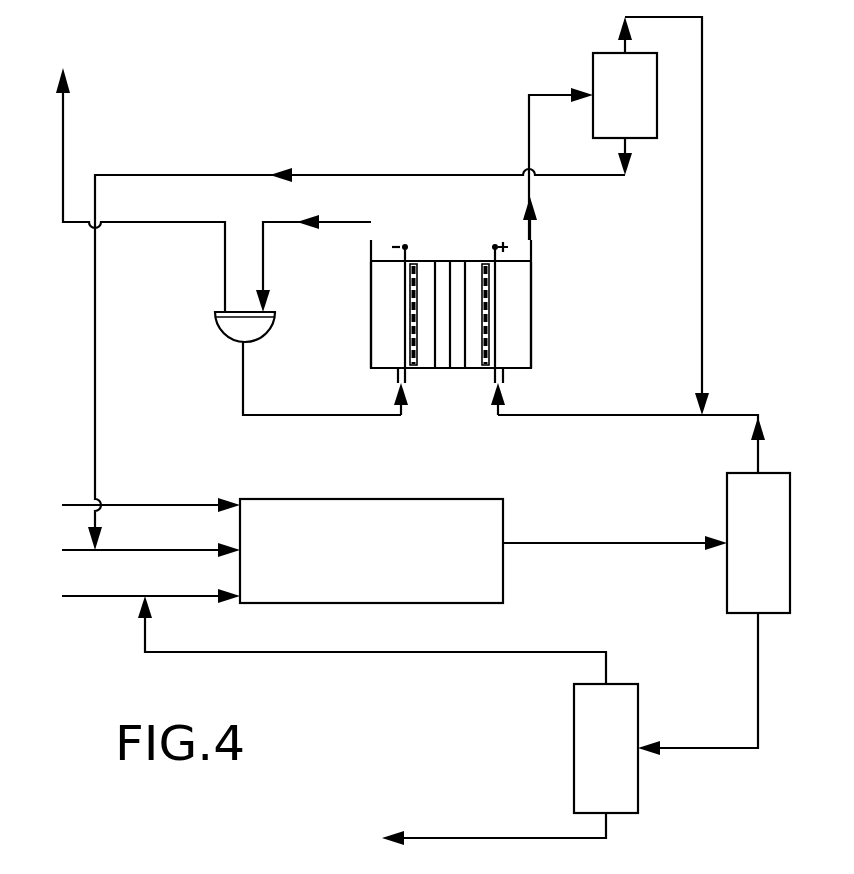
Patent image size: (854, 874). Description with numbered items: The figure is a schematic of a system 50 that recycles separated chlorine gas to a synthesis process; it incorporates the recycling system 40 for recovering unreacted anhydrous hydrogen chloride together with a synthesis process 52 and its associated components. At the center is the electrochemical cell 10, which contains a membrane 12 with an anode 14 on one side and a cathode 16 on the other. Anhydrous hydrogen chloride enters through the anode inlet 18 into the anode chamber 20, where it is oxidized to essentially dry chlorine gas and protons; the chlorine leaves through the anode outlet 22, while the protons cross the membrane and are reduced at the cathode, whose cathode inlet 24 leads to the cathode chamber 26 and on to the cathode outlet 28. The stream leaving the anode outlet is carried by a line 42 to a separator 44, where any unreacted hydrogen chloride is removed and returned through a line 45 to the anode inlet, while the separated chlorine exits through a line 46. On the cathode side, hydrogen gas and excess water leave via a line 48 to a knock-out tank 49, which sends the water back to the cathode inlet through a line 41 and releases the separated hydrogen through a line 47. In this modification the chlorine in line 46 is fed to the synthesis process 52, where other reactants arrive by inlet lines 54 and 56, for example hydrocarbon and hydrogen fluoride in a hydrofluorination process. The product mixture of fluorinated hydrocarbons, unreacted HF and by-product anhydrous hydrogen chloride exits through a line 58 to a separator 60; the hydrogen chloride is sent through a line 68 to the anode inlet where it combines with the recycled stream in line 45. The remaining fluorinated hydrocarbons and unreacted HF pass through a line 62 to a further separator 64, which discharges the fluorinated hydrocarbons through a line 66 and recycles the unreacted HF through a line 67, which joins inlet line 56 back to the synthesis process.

The electrochemical cell 10 is at (570, 283).
The membrane 12 is at (447, 370).
The anode 14 is at (472, 348).
The cathode 16 is at (424, 348).
The anode inlet 18 is at (502, 374).
The anode chamber 20 is at (525, 320).
The anode outlet 22 is at (538, 240).
The cathode inlet 24 is at (400, 372).
The cathode chamber 26 is at (372, 305).
The cathode outlet 28 is at (375, 240).
The system for recycling unreacted anhydrous hydrogen chloride 40 is at (233, 430).
The line 41 is at (313, 418).
The anolyte outlet line 42 is at (528, 115).
The separator 44 is at (605, 52).
The line 45 is at (703, 60).
The line 46 is at (372, 176).
The line 47 is at (112, 226).
The line 48 is at (265, 258).
The knock-out tank 49 is at (233, 342).
The system which recycles separated chlorine gas to a synthesis process 50 is at (302, 152).
The synthesis process 52 is at (388, 499).
The inlet line 54 is at (68, 505).
The inlet line 56 is at (68, 596).
The line 58 is at (588, 543).
The separator 60 is at (770, 620).
The line 62 is at (758, 680).
The further separator 64 is at (572, 723).
The line 66 is at (453, 838).
The line 67 is at (362, 653).
The line 68 is at (757, 450).